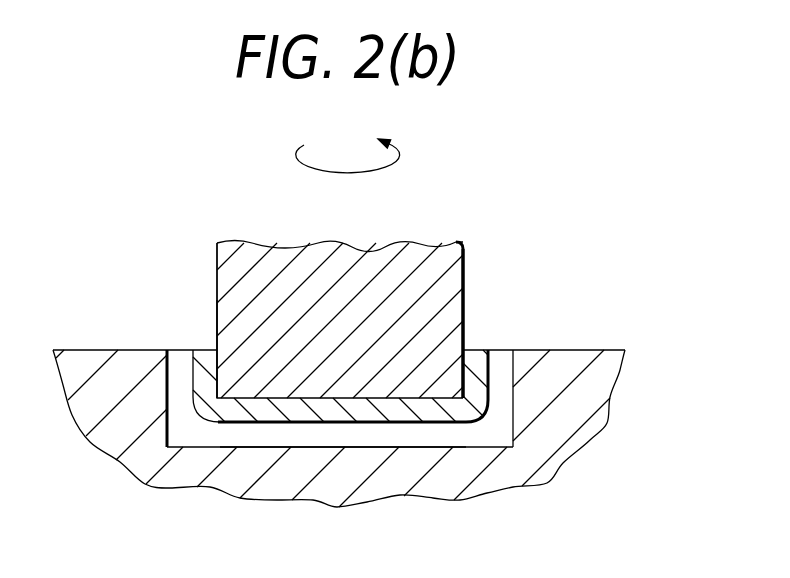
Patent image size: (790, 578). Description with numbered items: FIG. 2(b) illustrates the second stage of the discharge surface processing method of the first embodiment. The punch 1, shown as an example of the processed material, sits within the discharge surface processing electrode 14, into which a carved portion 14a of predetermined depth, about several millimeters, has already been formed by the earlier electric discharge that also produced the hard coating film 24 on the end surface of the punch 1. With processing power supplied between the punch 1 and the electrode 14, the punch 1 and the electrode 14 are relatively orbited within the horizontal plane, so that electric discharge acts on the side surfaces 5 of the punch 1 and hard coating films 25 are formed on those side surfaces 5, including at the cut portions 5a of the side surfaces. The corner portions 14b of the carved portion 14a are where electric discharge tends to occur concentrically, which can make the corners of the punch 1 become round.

The punch 1 is at (445, 252).
The side surfaces 5 is at (217, 297).
The cut portions of the side surfaces 5a is at (219, 372).
The hard coating films 25 is at (193, 360).
The discharge surface processing electrode 14 is at (587, 390).
The carved portion 14a is at (165, 420).
The corner portions 14b is at (138, 452).
The hard coating film 24 is at (358, 412).